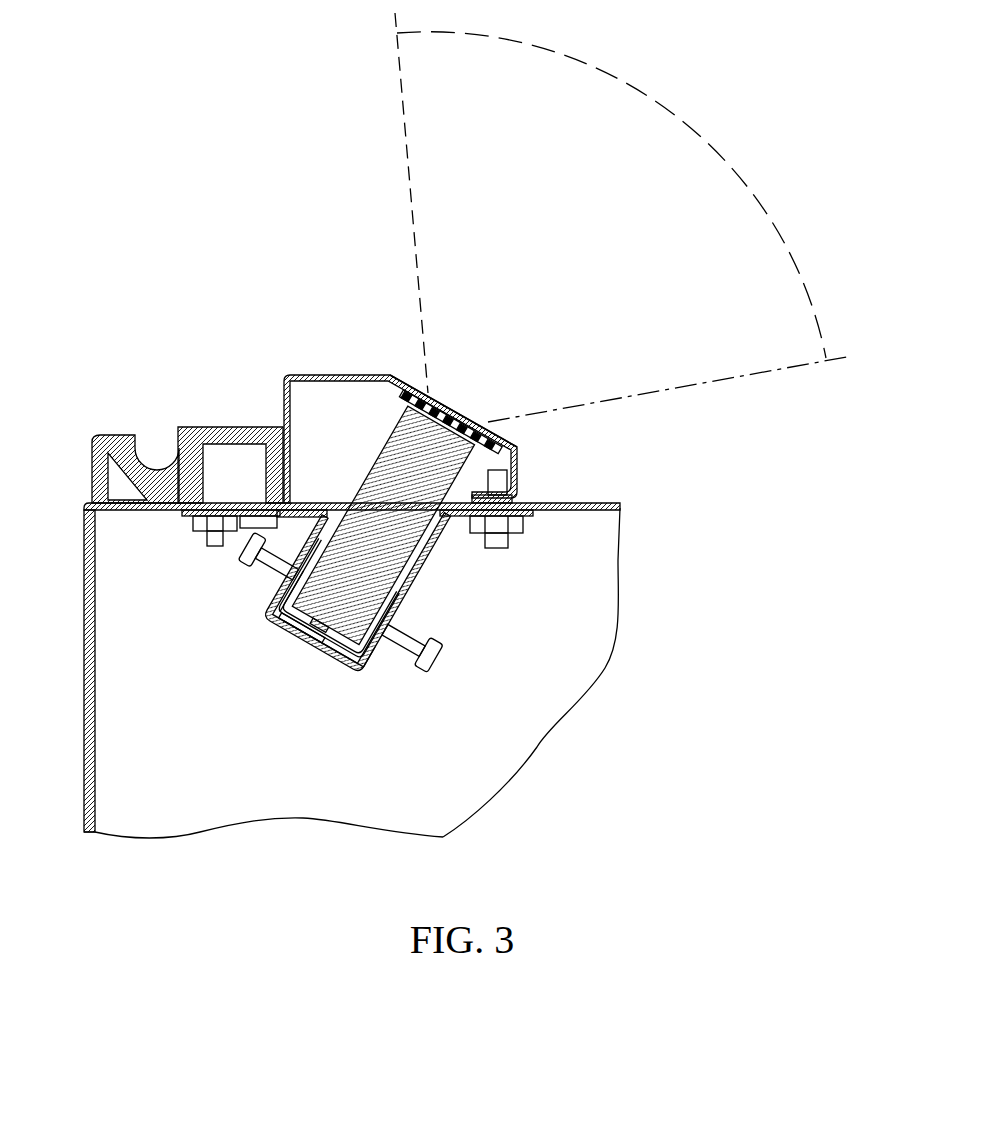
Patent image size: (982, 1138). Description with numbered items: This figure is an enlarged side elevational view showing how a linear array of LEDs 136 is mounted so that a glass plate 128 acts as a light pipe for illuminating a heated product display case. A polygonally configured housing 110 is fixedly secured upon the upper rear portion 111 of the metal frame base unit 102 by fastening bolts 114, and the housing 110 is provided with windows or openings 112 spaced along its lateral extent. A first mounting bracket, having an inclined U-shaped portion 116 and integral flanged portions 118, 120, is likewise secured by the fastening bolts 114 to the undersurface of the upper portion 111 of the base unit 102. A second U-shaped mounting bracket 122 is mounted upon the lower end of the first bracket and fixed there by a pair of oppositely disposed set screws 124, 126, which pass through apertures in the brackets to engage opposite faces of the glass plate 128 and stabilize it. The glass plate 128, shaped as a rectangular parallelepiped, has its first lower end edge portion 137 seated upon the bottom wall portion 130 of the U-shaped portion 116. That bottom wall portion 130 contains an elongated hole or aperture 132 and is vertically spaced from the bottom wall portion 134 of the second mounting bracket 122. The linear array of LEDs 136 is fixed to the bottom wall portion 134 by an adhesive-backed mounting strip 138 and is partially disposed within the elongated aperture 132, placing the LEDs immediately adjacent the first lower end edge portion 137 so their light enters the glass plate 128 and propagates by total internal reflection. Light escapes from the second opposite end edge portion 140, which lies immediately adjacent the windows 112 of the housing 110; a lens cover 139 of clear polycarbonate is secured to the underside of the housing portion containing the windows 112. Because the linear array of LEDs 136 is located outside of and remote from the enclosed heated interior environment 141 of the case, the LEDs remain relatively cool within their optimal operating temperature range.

The metal frame base unit 102 is at (93, 723).
The polygonally configured housing 110 is at (300, 374).
The upper rear portion 111 is at (162, 502).
The windows or openings 112 is at (473, 420).
The fastening bolts 114 is at (210, 545).
The inclined U-shaped portion of first mounting bracket 116 is at (417, 573).
The flanged portion of first mounting bracket 118 is at (533, 510).
The flanged portion of first mounting bracket 120 is at (218, 512).
The second U-shaped mounting bracket 122 is at (263, 617).
The set screw 124 is at (245, 563).
The set screw 126 is at (432, 652).
The glass plate 128 is at (387, 493).
The bottom wall portion of U-shaped portion 130 is at (360, 675).
The elongated hole or aperture 132 is at (347, 630).
The bottom wall portion of second mounting bracket 134 is at (343, 667).
The linear array of LEDs 136 is at (307, 645).
The first lower end edge portion of glass plate 137 is at (318, 606).
The adhesive-backed mounting strip 138 is at (289, 638).
The lens cover 139 is at (450, 403).
The second opposite end edge portion of glass plate 140 is at (405, 428).
The enclosed heated interior environment 141 is at (800, 146).